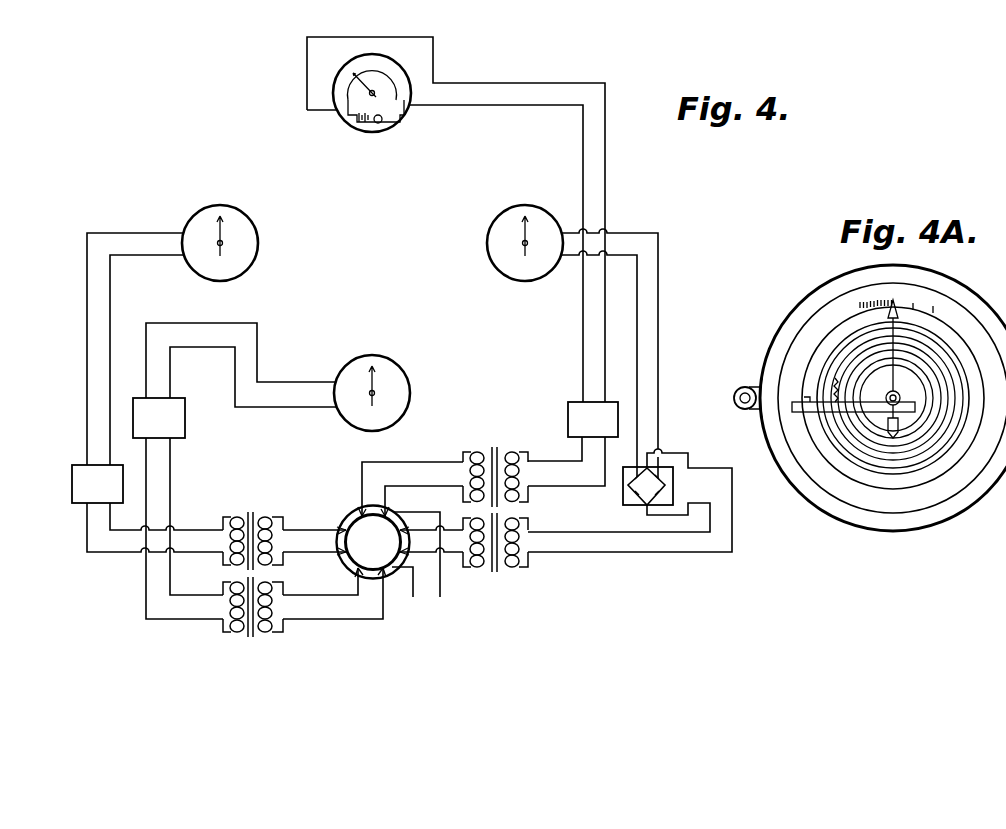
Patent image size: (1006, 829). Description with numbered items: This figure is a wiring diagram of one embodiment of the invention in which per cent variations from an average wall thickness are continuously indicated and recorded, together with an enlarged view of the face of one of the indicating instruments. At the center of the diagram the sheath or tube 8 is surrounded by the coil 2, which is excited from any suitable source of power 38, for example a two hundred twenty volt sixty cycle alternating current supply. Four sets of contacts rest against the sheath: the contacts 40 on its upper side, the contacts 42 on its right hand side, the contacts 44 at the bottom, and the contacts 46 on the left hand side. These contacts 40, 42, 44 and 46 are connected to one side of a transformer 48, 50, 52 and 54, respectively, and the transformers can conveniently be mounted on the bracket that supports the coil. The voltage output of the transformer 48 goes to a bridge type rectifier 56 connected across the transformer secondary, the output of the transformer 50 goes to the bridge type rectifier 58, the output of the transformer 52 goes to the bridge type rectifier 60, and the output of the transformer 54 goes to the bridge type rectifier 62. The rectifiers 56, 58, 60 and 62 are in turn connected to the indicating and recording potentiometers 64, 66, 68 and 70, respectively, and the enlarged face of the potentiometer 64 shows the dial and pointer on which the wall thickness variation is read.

In FIG. 4, the coil 2 is at (368, 538).
In FIG. 4, the sheath or tube 8 is at (392, 521).
In FIG. 4, the source of power 38 is at (421, 601).
In FIG. 4, the contacts 40 is at (383, 508).
In FIG. 4, the contacts 42 is at (408, 540).
In FIG. 4, the contacts 44 is at (366, 578).
In FIG. 4, the contacts 46 is at (337, 548).
In FIG. 4, the transformer 48 is at (498, 441).
In FIG. 4, the transformer 50 is at (494, 573).
In FIG. 4, the transformer 52 is at (250, 638).
In FIG. 4, the transformer 54 is at (255, 506).
In FIG. 4, the bridge type rectifier 56 is at (572, 413).
In FIG. 4, the bridge type rectifier 58 is at (645, 480).
In FIG. 4, the bridge type rectifier 60 is at (176, 421).
In FIG. 4, the bridge type rectifier 62 is at (80, 475).
In FIG. 4, the indicating and recording potentiometer 64 is at (403, 112).
In FIG. 4A, the indicating and recording potentiometer 64 is at (794, 312).
In FIG. 4, the indicating and recording potentiometer 66 is at (530, 280).
In FIG. 4, the indicating and recording potentiometer 68 is at (402, 378).
In FIG. 4, the indicating and recording potentiometer 70 is at (258, 248).